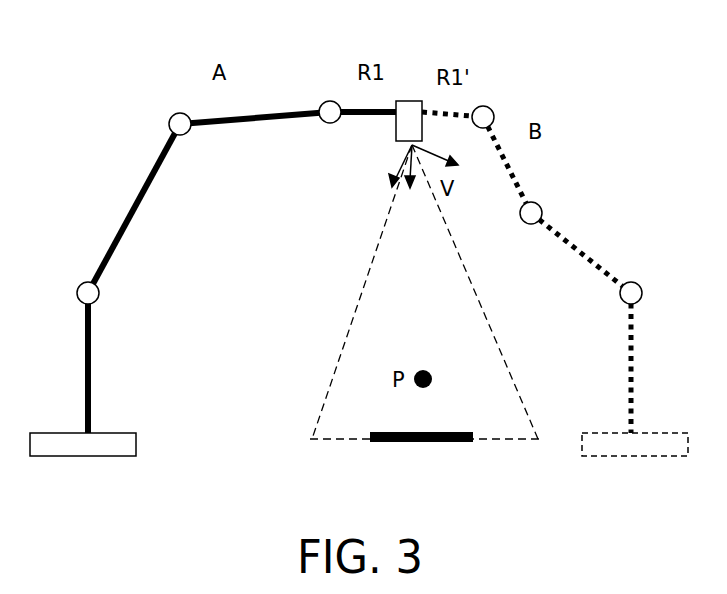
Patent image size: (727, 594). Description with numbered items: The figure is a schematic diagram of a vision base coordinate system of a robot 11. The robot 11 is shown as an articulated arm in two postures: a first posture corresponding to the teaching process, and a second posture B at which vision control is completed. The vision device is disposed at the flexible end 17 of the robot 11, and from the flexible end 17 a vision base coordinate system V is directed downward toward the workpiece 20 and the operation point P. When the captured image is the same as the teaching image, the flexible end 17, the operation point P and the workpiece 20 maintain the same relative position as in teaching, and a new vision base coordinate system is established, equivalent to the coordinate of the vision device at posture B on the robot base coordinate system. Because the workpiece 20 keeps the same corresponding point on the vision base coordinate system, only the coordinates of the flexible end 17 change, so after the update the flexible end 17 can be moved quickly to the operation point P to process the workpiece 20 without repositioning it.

The robot 11 is at (125, 213).
The flexible end 17 is at (409, 100).
The workpiece 20 is at (408, 443).